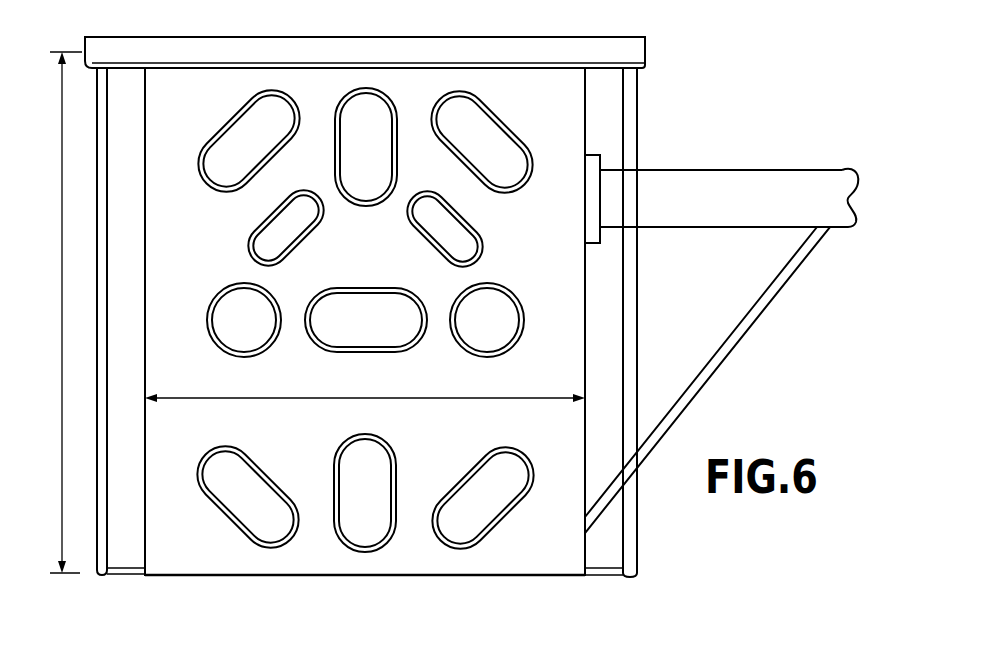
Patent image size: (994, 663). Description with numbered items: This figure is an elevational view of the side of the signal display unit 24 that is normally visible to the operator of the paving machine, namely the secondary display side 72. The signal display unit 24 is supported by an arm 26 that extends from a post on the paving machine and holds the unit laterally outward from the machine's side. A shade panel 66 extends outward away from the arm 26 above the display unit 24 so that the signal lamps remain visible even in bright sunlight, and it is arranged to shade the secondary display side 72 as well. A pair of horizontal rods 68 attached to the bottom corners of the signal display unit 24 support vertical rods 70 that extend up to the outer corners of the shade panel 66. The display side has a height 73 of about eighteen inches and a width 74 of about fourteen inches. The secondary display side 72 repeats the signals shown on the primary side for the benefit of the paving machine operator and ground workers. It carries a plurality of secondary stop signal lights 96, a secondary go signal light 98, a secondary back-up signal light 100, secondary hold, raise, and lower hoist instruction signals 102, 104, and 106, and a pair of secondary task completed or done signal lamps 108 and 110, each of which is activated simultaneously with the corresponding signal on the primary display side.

The signal display unit 24 is at (668, 105).
The arm 26 is at (752, 170).
The shade panel 66 is at (146, 37).
The horizontal rod 68 is at (100, 577).
The vertical rod 70 is at (97, 320).
The secondary display side 72 is at (195, 575).
The height 73 is at (62, 228).
The width 74 is at (397, 398).
The secondary "stop" signal light 96 is at (236, 152).
The secondary "go" signal light 98 is at (474, 331).
The secondary "back-up" signal light 100 is at (225, 331).
The secondary "hold" hoist instruction signal 102 is at (347, 331).
The secondary "raise" hoist instruction signal 104 is at (347, 158).
The secondary "lower" hoist instruction signal 106 is at (346, 504).
The secondary "task completed" signal lamp 108 is at (266, 218).
The secondary "task completed" signal lamp 110 is at (468, 215).